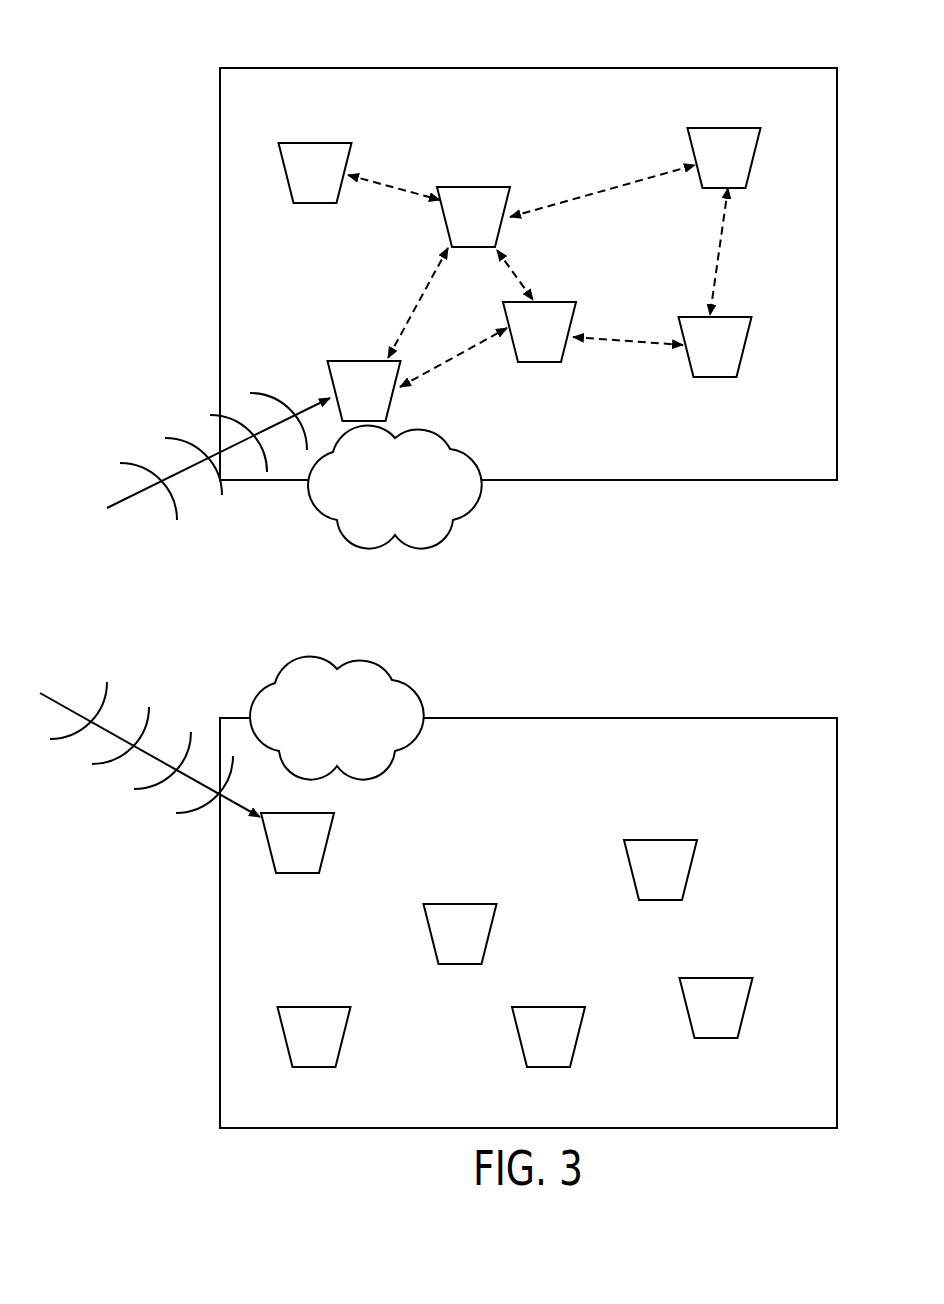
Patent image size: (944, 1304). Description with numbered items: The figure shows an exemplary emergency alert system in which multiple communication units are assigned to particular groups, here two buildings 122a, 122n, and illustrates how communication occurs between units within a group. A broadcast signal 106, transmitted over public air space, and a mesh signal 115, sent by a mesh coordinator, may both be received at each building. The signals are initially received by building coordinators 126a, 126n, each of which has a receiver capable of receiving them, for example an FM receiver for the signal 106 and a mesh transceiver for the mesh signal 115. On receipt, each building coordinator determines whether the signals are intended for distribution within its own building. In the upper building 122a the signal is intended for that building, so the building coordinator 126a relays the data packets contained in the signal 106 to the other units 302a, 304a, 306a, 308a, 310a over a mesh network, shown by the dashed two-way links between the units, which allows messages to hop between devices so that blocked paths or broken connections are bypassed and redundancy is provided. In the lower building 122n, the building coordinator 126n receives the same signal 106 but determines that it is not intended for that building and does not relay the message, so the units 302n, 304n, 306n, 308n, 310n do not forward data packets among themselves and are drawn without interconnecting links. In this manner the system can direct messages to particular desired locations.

The signal 106 is at (95, 481).
The mesh signal 115 is at (417, 545).
The building 122a is at (783, 68).
The building 122n is at (783, 718).
The building coordinator 126a is at (342, 406).
The building coordinator 126n is at (320, 858).
The unit 302a is at (562, 346).
The unit 302n is at (438, 948).
The unit 304a is at (496, 232).
The unit 304n is at (638, 884).
The unit 306a is at (293, 188).
The unit 306n is at (292, 1052).
The unit 308a is at (693, 362).
The unit 308n is at (526, 1052).
The unit 310a is at (702, 172).
The unit 310n is at (694, 1022).